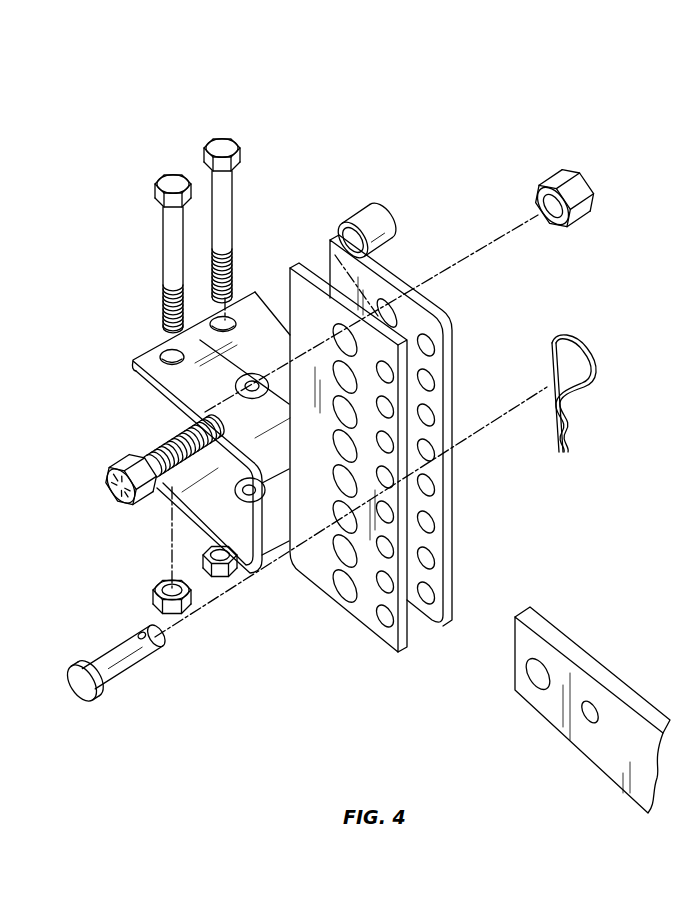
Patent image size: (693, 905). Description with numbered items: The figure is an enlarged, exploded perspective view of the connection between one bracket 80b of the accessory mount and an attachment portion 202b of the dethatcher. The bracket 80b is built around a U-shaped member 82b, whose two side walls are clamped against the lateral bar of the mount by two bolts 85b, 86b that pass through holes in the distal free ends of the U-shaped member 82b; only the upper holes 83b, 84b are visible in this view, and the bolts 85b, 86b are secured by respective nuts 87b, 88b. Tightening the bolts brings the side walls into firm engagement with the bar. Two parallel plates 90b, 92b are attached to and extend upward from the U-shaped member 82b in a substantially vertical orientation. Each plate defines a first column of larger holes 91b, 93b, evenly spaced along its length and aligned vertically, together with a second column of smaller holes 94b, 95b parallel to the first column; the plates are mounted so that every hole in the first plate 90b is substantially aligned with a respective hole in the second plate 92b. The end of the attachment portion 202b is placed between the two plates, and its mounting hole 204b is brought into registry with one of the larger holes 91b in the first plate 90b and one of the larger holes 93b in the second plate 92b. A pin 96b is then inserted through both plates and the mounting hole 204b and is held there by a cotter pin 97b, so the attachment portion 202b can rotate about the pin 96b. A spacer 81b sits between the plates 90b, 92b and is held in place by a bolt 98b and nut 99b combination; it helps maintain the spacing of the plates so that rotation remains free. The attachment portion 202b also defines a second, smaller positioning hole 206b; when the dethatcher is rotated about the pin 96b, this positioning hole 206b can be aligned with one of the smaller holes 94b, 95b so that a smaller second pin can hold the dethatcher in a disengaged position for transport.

The bracket 80b is at (163, 94).
The spacer 81b is at (357, 222).
The U-shaped member 82b is at (165, 497).
The upper hole 83b is at (160, 356).
The upper hole 84b is at (230, 316).
The bolt 85b is at (165, 181).
The bolt 86b is at (225, 145).
The nut 87b is at (153, 591).
The nut 88b is at (205, 565).
The first parallel plate 90b is at (300, 290).
The first column of larger holes 91b is at (338, 590).
The second parallel plate 92b is at (408, 282).
The first column of larger holes 93b is at (394, 313).
The second column of smaller holes 94b is at (383, 622).
The second column of smaller holes 95b is at (432, 593).
The pin 96b is at (127, 680).
The cotter pin 97b is at (592, 366).
The bolt 98b is at (125, 455).
The nut 99b is at (592, 216).
The attachment portion 202b is at (620, 672).
The mounting hole 204b is at (537, 680).
The positioning hole 206b is at (587, 714).